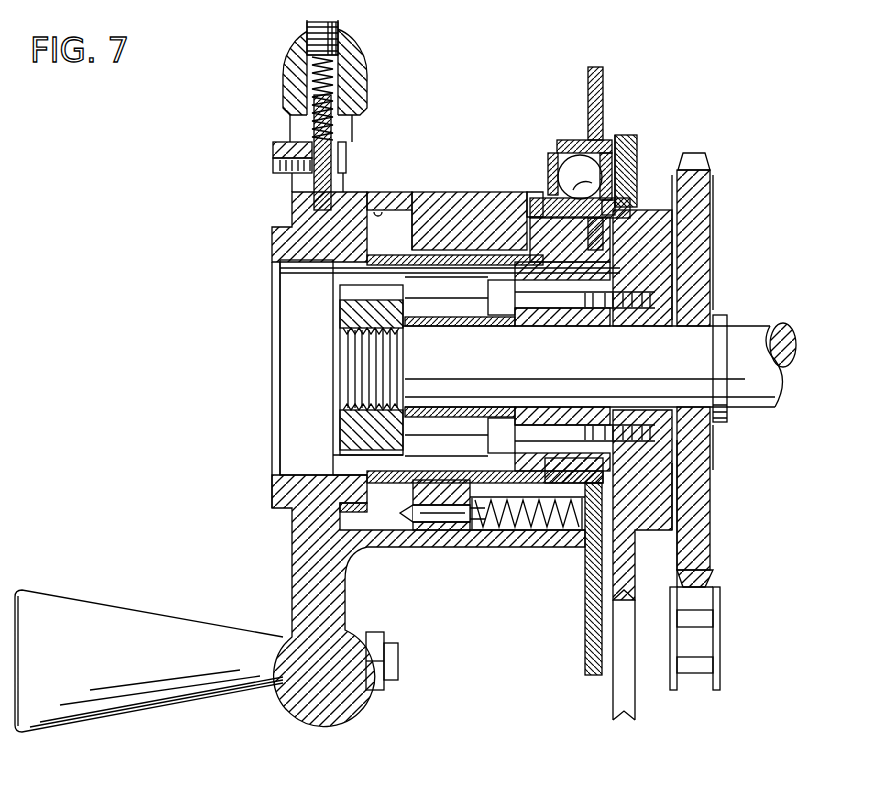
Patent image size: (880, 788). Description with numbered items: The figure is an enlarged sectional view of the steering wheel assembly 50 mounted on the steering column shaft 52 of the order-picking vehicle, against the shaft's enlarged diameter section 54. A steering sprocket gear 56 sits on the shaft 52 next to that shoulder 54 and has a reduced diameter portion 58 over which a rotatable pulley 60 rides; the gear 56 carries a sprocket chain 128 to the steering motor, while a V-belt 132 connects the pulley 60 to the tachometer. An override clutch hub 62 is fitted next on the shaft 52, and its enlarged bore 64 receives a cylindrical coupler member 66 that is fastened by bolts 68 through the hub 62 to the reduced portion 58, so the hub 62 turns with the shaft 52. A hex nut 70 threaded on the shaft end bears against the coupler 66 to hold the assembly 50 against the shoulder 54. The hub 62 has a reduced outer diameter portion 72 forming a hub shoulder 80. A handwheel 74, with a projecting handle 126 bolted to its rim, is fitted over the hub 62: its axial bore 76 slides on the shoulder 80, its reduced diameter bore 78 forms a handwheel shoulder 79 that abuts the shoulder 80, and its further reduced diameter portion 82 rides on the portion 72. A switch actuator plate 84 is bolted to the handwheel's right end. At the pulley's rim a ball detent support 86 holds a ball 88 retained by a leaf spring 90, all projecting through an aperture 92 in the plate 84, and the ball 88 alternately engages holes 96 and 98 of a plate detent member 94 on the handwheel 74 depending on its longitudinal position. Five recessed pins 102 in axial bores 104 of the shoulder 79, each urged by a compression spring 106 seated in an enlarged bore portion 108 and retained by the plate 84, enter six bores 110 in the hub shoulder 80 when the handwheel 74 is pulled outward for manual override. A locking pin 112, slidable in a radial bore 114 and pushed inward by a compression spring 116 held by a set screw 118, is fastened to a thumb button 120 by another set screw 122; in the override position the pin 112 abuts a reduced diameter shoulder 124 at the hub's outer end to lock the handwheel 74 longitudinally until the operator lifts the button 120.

The steering wheel assembly 50 is at (460, 190).
The steering column shaft 52 is at (780, 340).
The enlarged diameter section 54 is at (725, 320).
The steering sprocket gear 56 is at (702, 232).
The reduced diameter portion 58 is at (662, 448).
The pulley 60 is at (630, 230).
The override clutch hub 62 is at (278, 255).
The enlarged bore 64 is at (352, 463).
The coupler member 66 is at (445, 547).
The bolts 68 is at (541, 525).
The hex nut 70 is at (352, 312).
The reduced outer diameter portion 72 is at (412, 210).
The handwheel 74 is at (362, 58).
The axial bore 76 is at (378, 212).
The reduced diameter bore 78 is at (495, 253).
The handwheel shoulder 79 is at (418, 228).
The hub shoulder 80 is at (298, 220).
The further reduced diameter portion 82 is at (545, 255).
The switch actuator plate 84 is at (595, 67).
The ball detent support 86 is at (630, 165).
The ball 88 is at (552, 170).
The leaf spring 90 is at (575, 168).
The aperture 92 is at (603, 118).
The plate detent member 94 is at (540, 200).
The hole 96 is at (610, 200).
The hole 98 is at (625, 190).
The recessed pins 102 is at (458, 547).
The axial bores 104 is at (414, 547).
The compression spring 106 is at (572, 520).
The enlarged portion of bore 108 is at (497, 532).
The bores 110 is at (352, 512).
The locking pin 112 is at (331, 152).
The radial bore 114 is at (307, 95).
The compression spring 116 is at (318, 72).
The set screw 118 is at (335, 24).
The thumb button 120 is at (280, 175).
The set screw 122 is at (278, 160).
The reduced diameter shoulder 124 is at (352, 130).
The handle 126 is at (155, 615).
The sprocket chain 128 is at (720, 612).
The V-belt 132 is at (635, 705).